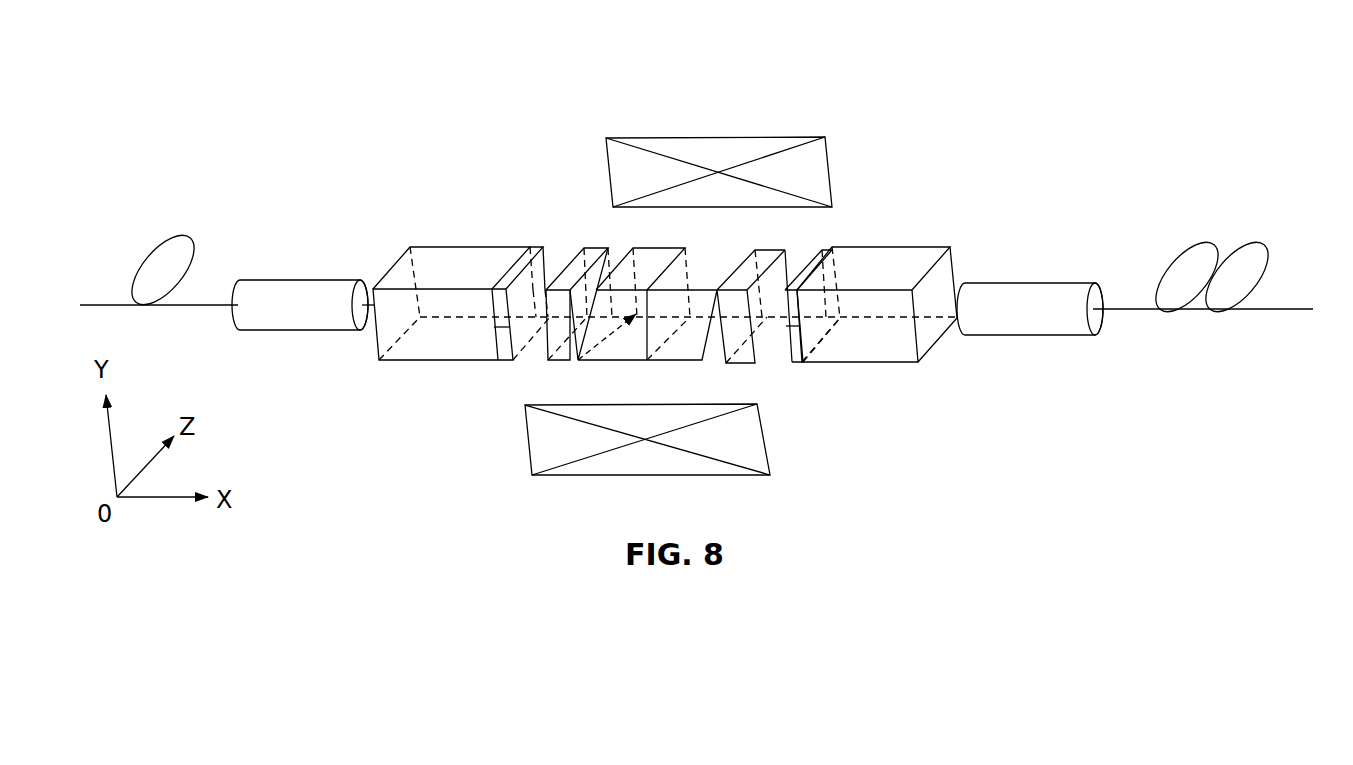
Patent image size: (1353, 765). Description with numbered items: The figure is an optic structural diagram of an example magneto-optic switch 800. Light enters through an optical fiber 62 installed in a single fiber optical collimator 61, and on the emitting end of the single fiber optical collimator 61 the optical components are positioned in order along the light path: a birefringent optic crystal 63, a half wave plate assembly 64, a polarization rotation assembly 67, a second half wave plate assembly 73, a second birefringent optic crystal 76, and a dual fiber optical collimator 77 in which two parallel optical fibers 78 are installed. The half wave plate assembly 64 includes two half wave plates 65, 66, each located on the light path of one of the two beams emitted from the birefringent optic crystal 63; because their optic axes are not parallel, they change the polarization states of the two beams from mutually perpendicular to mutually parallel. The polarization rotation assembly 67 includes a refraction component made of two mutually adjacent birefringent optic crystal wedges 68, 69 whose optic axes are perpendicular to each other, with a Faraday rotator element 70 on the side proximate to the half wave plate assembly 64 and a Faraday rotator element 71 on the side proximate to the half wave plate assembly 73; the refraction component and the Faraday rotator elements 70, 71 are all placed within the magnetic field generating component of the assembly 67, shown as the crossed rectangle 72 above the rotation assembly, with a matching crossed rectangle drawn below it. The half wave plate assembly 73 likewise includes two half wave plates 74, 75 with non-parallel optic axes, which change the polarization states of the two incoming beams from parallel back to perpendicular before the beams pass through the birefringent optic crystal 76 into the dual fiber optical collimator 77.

The magneto-optic switch 800 is at (378, 127).
The single fiber optical collimator 61 is at (283, 283).
The optical fiber 62 is at (212, 304).
The birefringent optic crystal 63 is at (452, 256).
The half wave plate assembly 64 is at (461, 317).
The half wave plate 65 is at (545, 262).
The half wave plate 66 is at (490, 362).
The polarization rotation assembly 67 is at (754, 135).
The birefringent optic crystal wedge 68 is at (628, 362).
The birefringent optic crystal wedge 69 is at (686, 362).
The Faraday rotator element 70 is at (560, 362).
The Faraday rotator element 71 is at (757, 258).
The magnet 72 is at (817, 168).
The half wave plate assembly 73 is at (805, 394).
The half wave plate 74 is at (877, 279).
The half wave plate 75 is at (800, 362).
The birefringent optic crystal 76 is at (915, 267).
The dual fiber optical collimator 77 is at (1040, 283).
The parallel optical fibers 78 is at (1188, 312).